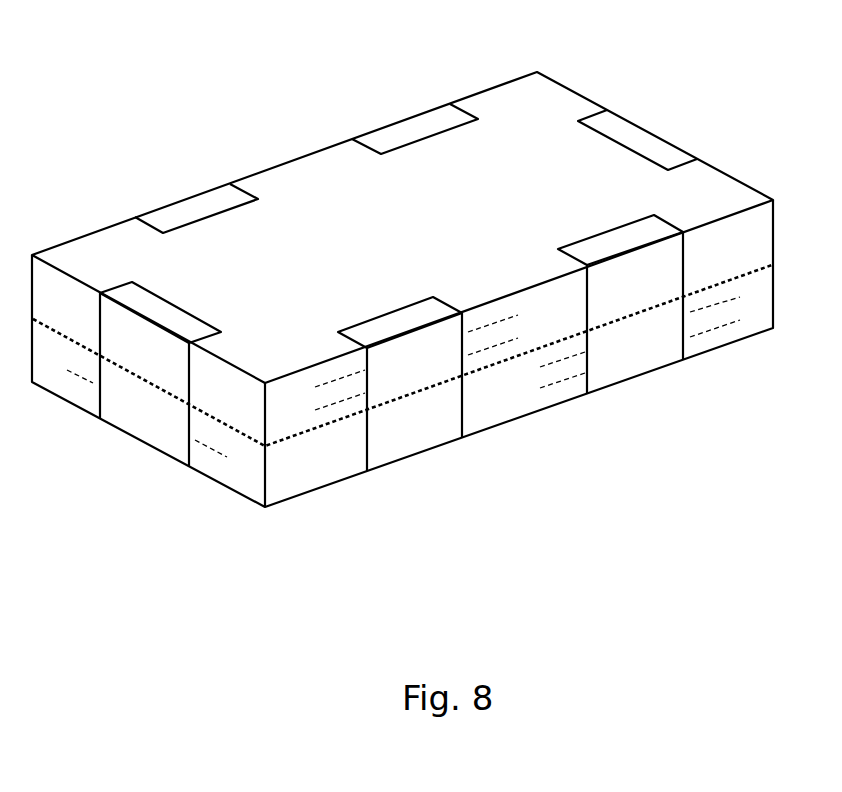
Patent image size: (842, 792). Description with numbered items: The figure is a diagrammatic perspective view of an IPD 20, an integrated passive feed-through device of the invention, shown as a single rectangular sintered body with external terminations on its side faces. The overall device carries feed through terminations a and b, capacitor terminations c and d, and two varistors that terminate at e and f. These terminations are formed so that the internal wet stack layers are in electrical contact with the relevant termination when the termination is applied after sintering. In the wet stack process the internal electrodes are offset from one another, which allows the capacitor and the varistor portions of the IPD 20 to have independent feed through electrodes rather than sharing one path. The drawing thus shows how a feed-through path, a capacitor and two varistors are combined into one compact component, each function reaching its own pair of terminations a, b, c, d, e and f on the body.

The IPD 20 is at (178, 68).
The feed through termination a is at (160, 381).
The feed through termination b is at (637, 130).
The capacitor termination c is at (400, 395).
The capacitor termination d is at (196, 192).
The varistor termination e is at (620, 315).
The varistor termination f is at (415, 114).